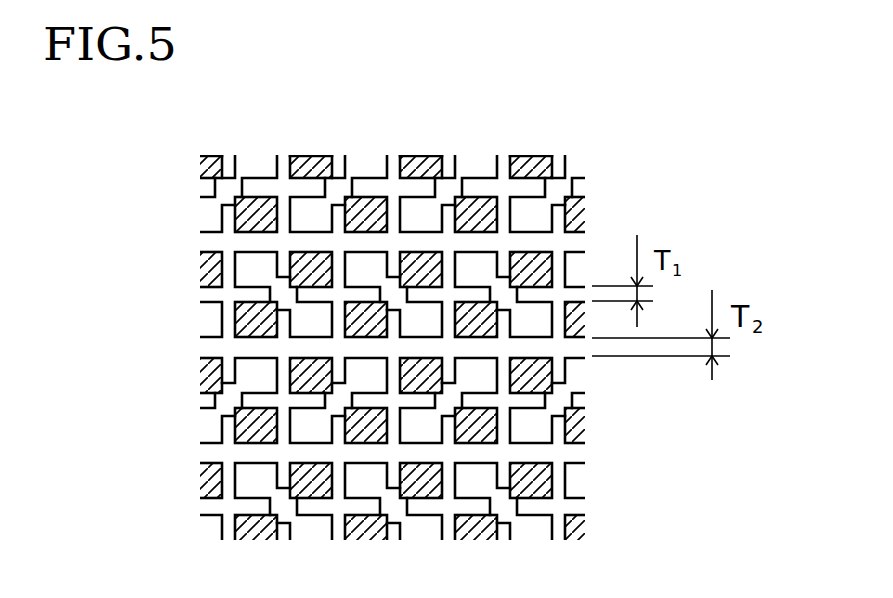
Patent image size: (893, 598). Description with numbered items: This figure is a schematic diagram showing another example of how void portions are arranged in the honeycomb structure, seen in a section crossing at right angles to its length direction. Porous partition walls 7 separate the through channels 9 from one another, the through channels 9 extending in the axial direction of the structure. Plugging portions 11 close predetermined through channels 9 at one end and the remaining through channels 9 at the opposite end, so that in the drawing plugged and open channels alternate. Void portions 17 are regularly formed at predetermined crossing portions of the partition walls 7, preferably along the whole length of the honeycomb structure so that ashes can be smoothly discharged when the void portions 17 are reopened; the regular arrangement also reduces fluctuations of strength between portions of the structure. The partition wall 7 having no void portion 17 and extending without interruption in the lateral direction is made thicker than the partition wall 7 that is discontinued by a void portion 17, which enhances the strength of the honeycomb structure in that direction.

The partition wall 7 is at (345, 383).
The through channel 9 is at (413, 320).
The plugging portion 11 is at (345, 321).
The void portion in crossing portion 17 is at (398, 290).